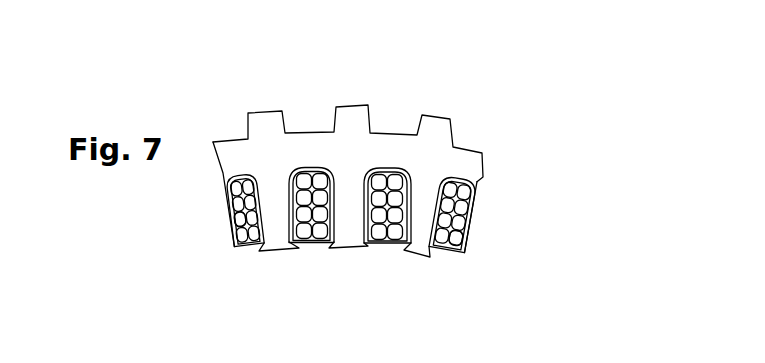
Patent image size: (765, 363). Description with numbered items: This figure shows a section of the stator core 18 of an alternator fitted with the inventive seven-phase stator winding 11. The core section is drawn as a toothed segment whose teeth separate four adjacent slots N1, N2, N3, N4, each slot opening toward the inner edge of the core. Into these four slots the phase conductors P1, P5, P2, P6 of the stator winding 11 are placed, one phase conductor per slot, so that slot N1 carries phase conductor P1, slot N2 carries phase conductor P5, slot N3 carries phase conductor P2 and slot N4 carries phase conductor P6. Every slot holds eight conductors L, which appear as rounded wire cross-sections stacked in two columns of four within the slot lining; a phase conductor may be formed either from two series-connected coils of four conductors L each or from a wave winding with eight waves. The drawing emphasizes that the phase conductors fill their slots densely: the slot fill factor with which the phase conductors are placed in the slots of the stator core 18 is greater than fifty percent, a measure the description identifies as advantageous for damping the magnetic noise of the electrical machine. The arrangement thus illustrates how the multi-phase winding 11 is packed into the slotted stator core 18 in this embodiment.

The stator core 18 is at (437, 148).
The stator winding 11 is at (488, 216).
The slot N1 is at (234, 182).
The slot N2 is at (314, 171).
The slot N3 is at (393, 170).
The slot N4 is at (467, 193).
The phase conductor P1 is at (250, 247).
The phase conductor P5 is at (315, 238).
The phase conductor P2 is at (382, 240).
The phase conductor P6 is at (442, 250).
The conductor L is at (232, 223).